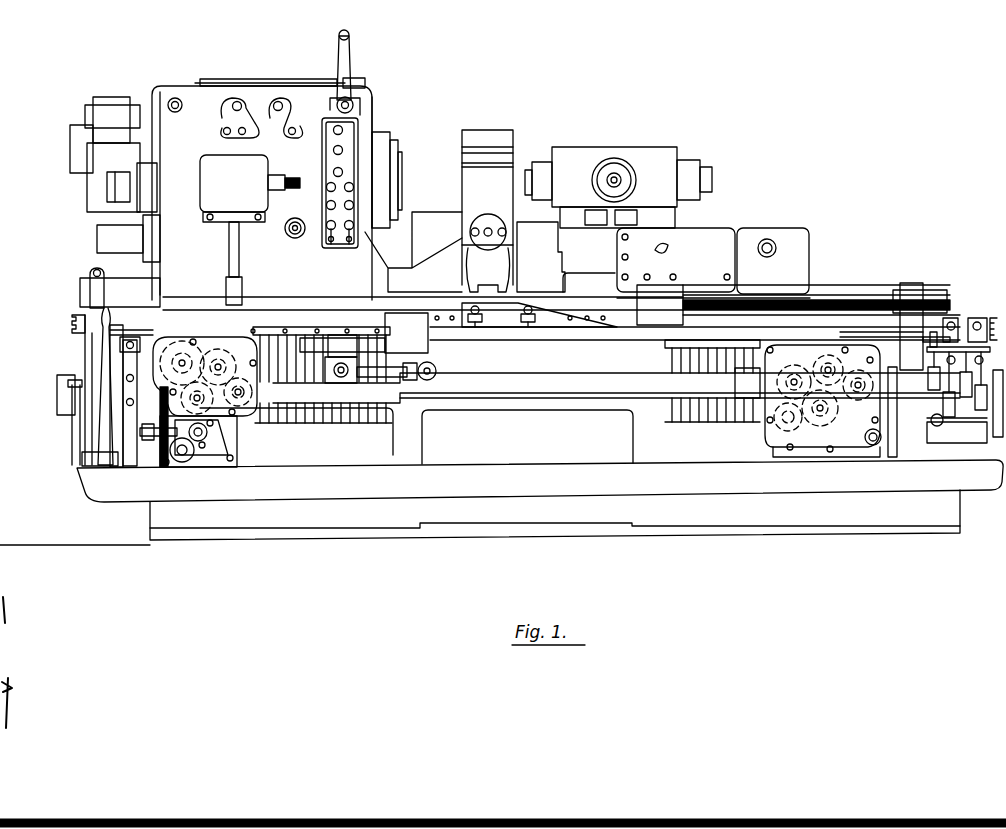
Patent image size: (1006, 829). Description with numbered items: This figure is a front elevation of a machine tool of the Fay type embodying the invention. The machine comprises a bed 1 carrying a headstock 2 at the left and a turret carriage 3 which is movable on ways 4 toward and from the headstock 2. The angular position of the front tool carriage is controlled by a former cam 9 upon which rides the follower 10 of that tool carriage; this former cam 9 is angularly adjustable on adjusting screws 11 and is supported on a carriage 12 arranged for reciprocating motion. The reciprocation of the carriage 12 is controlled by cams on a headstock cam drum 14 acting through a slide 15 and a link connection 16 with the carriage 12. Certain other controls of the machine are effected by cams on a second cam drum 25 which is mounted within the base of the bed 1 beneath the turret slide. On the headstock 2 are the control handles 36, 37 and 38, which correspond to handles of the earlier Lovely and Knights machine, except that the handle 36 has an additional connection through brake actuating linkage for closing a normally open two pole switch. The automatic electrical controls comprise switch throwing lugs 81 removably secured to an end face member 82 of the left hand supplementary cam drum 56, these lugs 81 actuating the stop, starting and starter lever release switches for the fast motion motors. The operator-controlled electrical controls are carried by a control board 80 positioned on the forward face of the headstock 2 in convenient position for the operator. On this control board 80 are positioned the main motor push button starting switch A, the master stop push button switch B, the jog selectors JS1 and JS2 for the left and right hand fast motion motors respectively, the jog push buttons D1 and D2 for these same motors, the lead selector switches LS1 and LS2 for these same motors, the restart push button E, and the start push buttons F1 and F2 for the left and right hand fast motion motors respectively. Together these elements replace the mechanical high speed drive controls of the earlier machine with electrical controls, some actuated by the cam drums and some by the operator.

The bed 1 is at (541, 470).
The headstock 2 is at (183, 135).
The turret carriage 3 is at (668, 220).
The ways 4 is at (426, 290).
The former cam 9 is at (510, 320).
The follower 10 is at (490, 291).
The adjusting screws 11 is at (470, 325).
The carriage 12 is at (468, 375).
The headstock cam drum 14 is at (308, 425).
The slide 15 is at (349, 405).
The link connection 16 is at (398, 382).
The second cam drum 25 is at (713, 423).
The control handle 36 is at (350, 50).
The control handle 37 is at (282, 120).
The control handle 38 is at (247, 115).
The left hand supplementary cam drum 56 is at (96, 345).
The control board 80 is at (341, 128).
The switch throwing lugs 81 is at (72, 322).
The end face member 82 is at (84, 365).
The main motor push button starting switch A is at (341, 149).
The master stop push button switch B is at (341, 171).
The restart push button E is at (343, 185).
The start push button F1 is at (327, 184).
The start push button F2 is at (353, 186).
The jog selector JS1 is at (327, 205).
The jog selector JS2 is at (354, 204).
The jog push button D1 is at (327, 227).
The jog push button D2 is at (354, 225).
The lead selector switch LS1 is at (329, 244).
The lead selector switch LS2 is at (351, 244).